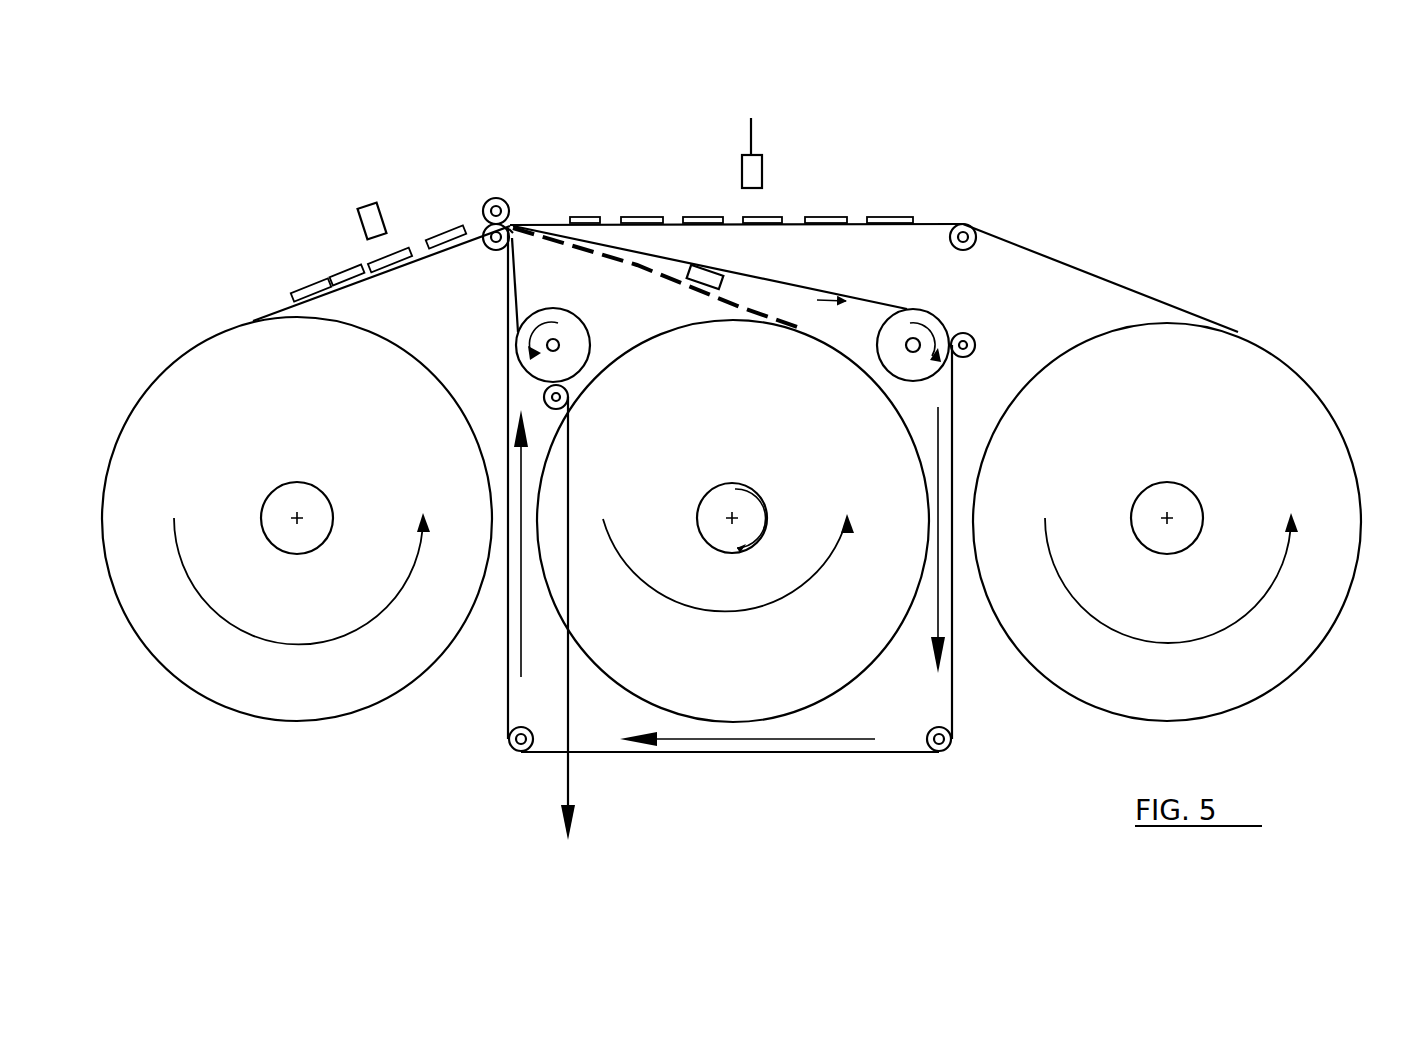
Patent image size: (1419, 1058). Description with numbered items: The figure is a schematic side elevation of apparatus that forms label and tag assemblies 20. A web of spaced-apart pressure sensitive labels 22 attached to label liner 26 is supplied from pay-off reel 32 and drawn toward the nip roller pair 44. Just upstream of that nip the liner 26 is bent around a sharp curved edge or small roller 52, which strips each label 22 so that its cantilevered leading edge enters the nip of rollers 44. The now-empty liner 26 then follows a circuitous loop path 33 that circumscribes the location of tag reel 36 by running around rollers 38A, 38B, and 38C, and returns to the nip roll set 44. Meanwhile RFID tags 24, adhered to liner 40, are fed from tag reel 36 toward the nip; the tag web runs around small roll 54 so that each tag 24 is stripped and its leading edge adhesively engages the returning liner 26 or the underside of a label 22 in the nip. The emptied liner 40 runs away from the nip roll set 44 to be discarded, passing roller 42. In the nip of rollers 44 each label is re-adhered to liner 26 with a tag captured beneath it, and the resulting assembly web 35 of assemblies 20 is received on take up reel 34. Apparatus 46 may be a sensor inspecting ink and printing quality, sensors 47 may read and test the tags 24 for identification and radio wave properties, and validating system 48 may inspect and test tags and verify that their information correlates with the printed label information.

The label assemblies 20 is at (308, 281).
The pressure sensitive labels 22 is at (830, 215).
The RFID tags 24 is at (636, 266).
The label liner 26 is at (870, 297).
The pay-off reel 32 is at (1305, 415).
The circuitous loop path 33 is at (906, 762).
The take up reel 34 is at (363, 683).
The assembly web 35 is at (364, 282).
The tag reel 36 is at (800, 688).
The roller 38A is at (937, 332).
The roller 38B is at (953, 713).
The roller 38C is at (518, 759).
The tag liner 40 is at (523, 289).
The guide roller 42 is at (570, 383).
The nip roller pair 44 is at (500, 192).
The validating apparatus 46 is at (765, 160).
The sensor 47 is at (717, 270).
The validating system 48 is at (383, 201).
The small roller 52 is at (518, 232).
The small roll 54 is at (517, 241).